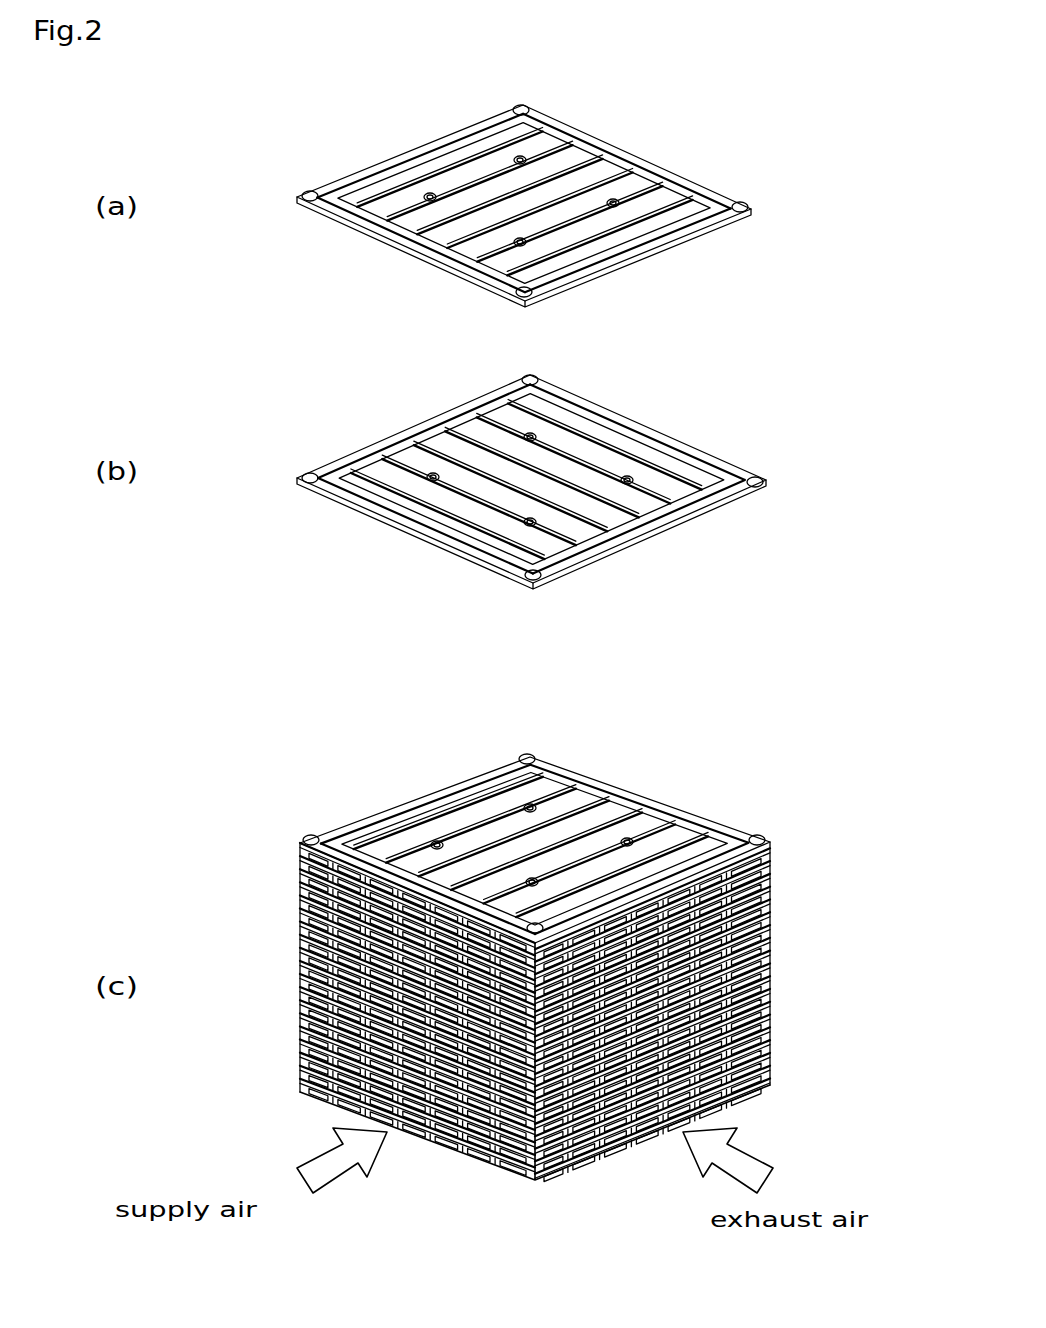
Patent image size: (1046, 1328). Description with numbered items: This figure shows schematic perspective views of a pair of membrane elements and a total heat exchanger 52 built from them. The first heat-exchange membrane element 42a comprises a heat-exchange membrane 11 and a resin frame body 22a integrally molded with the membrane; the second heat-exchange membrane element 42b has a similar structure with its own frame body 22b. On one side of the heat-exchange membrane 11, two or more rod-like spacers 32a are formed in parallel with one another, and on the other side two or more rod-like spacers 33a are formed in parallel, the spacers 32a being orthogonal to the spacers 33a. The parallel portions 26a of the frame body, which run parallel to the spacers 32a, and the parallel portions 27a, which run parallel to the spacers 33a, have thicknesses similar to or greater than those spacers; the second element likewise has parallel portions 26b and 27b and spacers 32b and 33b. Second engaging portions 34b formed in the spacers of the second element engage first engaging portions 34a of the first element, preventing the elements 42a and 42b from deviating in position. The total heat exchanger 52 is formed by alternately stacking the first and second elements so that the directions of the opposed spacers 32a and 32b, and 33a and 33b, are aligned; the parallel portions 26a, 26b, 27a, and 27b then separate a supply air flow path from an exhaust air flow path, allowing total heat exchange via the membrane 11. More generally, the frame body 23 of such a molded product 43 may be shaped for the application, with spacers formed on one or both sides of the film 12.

The heat-exchange membrane 11 is at (620, 160).
The film 12 is at (561, 519).
The resin frame body 22a is at (423, 140).
The resin frame body 22b is at (377, 518).
The frame body 23 is at (491, 448).
The parallel portion A 26a is at (385, 158).
The parallel portion A 26b is at (657, 547).
The parallel portion B 27a is at (410, 257).
The parallel portion B 27b is at (447, 550).
The rod-like spacer 32a is at (563, 137).
The rod-like spacer 32b is at (493, 572).
The rod-like spacer 33a is at (650, 257).
The rod-like spacer 33b is at (573, 422).
The first engaging portion 34a is at (520, 156).
The second engaging portion 34b is at (523, 430).
The first heat-exchange membrane element 42a is at (305, 167).
The second heat-exchange membrane element 42b is at (310, 432).
The molded product 43 is at (462, 588).
The total heat exchanger 52 is at (650, 760).